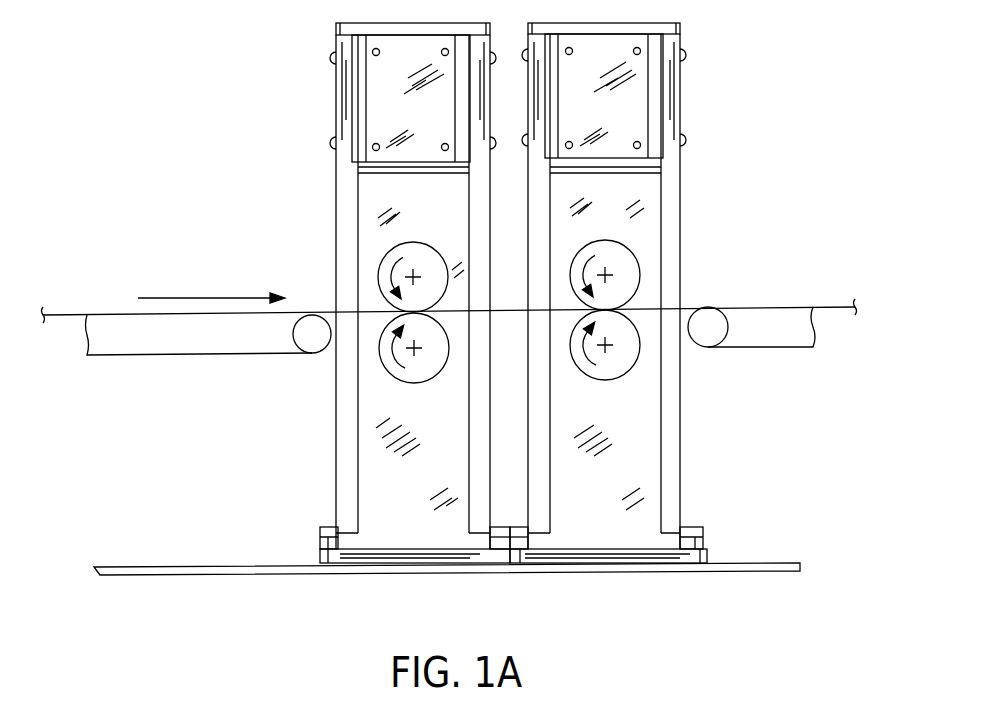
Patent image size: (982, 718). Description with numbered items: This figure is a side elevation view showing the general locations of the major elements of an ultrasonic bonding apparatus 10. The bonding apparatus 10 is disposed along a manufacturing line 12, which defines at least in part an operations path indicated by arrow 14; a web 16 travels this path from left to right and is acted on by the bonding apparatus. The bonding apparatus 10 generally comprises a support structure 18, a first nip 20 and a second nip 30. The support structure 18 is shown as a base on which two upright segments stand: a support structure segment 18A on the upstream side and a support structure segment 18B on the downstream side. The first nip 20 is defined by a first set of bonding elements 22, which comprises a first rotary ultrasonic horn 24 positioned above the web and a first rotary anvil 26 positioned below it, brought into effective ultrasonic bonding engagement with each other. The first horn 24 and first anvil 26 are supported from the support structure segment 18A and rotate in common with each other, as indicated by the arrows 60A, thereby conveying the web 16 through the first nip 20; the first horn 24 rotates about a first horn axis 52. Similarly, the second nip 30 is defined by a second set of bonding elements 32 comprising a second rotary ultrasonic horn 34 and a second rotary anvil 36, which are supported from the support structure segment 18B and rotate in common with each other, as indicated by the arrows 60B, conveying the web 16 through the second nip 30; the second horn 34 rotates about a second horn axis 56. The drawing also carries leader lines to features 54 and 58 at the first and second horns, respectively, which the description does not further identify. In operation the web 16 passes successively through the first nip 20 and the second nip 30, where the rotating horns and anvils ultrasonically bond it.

The bonding apparatus 10 is at (755, 120).
The manufacturing line 12 is at (108, 315).
The arrow 14 is at (212, 297).
The web 16 is at (63, 317).
The support structure 18 is at (562, 568).
The support structure segment 18A is at (336, 200).
The support structure segment 18B is at (680, 239).
The first nip 20 is at (388, 315).
The first set of bonding elements 22 is at (420, 313).
The first rotary ultrasonic horn 24 is at (397, 247).
The first rotary anvil 26 is at (388, 370).
The second nip 30 is at (605, 312).
The second set of bonding elements 32 is at (597, 367).
The second rotary ultrasonic horn 34 is at (640, 257).
The second rotary anvil 36 is at (637, 350).
The first horn axis 52 is at (415, 275).
The first upper roller surface 54 is at (437, 250).
The second horn axis 56 is at (607, 273).
The second upper roller surface 58 is at (640, 283).
The arrows 60A is at (388, 272).
The arrows 60B is at (388, 345).